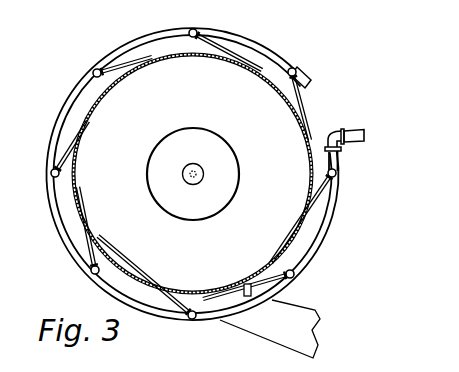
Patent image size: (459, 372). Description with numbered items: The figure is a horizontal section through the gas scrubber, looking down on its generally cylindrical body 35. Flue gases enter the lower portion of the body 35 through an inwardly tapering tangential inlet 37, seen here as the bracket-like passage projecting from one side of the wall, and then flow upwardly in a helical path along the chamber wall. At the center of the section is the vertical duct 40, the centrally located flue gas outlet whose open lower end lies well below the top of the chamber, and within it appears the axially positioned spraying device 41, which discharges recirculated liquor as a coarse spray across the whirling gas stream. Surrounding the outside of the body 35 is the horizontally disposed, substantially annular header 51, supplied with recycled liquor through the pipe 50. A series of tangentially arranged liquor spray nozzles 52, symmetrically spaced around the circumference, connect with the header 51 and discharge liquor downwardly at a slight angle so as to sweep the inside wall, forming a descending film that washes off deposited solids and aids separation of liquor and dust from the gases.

The cylindrical body 35 is at (310, 138).
The tangential inlet 37 is at (260, 322).
The vertical duct 40 is at (199, 128).
The spraying device 41 is at (190, 166).
The pipe 50 is at (352, 144).
The annular header 51 is at (332, 214).
The liquor spray nozzles 52 is at (142, 63).